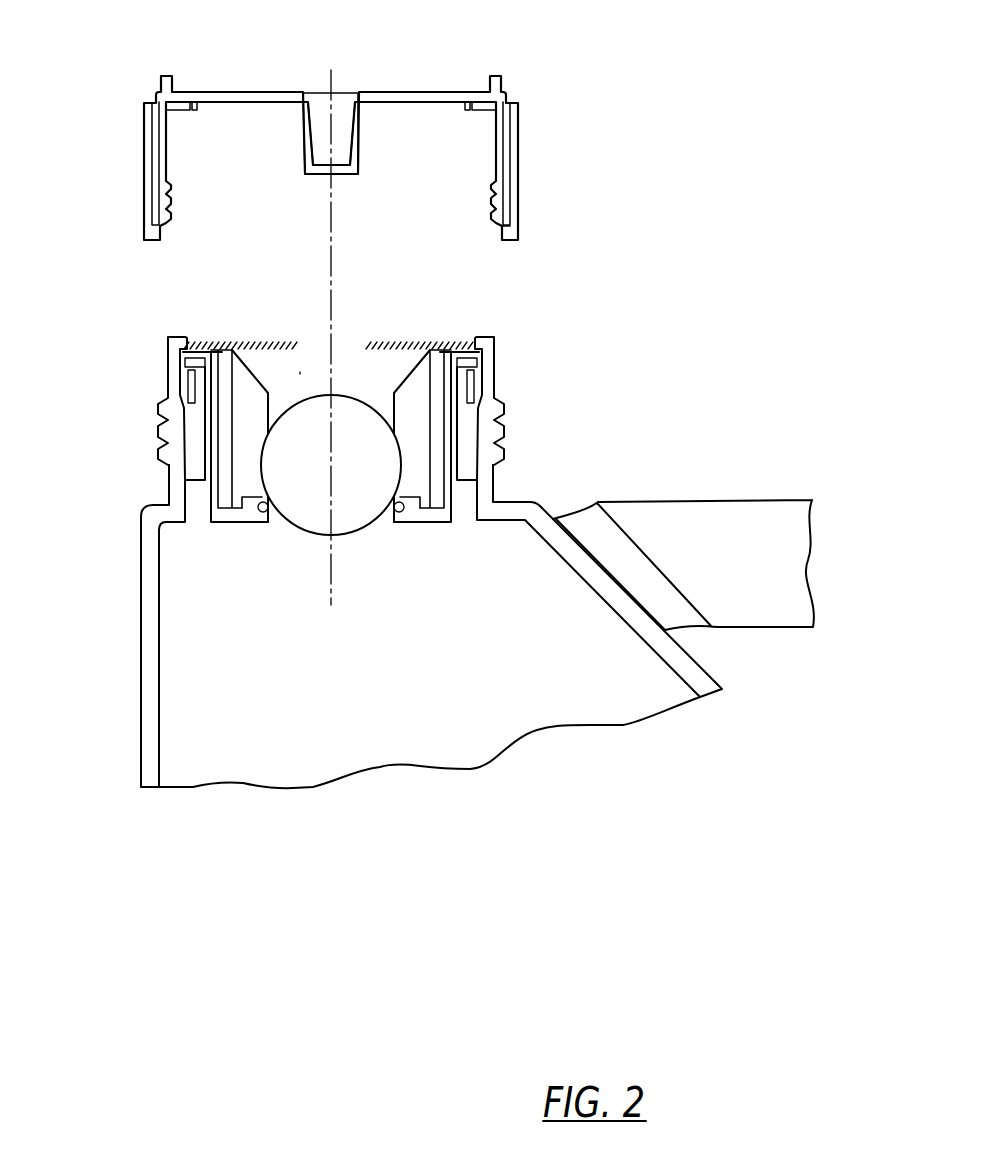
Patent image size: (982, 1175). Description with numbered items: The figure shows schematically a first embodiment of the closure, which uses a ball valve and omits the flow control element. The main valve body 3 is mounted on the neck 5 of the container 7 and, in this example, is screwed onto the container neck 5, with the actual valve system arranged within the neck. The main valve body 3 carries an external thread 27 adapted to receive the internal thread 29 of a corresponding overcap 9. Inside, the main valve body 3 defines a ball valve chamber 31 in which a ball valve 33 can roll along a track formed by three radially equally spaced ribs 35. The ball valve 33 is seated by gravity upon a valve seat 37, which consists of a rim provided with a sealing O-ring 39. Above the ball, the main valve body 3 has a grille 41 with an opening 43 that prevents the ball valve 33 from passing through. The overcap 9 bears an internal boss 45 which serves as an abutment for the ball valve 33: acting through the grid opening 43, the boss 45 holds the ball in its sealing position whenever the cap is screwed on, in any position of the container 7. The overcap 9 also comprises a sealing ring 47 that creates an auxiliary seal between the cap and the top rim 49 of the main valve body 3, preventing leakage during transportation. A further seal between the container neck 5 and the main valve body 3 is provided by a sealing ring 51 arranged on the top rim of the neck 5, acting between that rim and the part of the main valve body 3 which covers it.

The main valve body 3 is at (158, 360).
The neck 5 is at (198, 455).
The container 7 is at (137, 677).
The overcap 9 is at (535, 90).
The external thread 27 is at (500, 418).
The internal thread 29 is at (502, 225).
The ball valve chamber 31 is at (305, 386).
The ball valve 33 is at (355, 530).
The ribs 35 is at (414, 382).
The valve seat 37 is at (232, 517).
The sealing O-ring 39 is at (435, 515).
The grille 41 is at (268, 342).
The opening 43 is at (342, 346).
The internal boss 45 is at (306, 170).
The sealing ring 47 is at (181, 118).
The top rim 49 is at (492, 340).
The sealing ring 51 is at (197, 348).